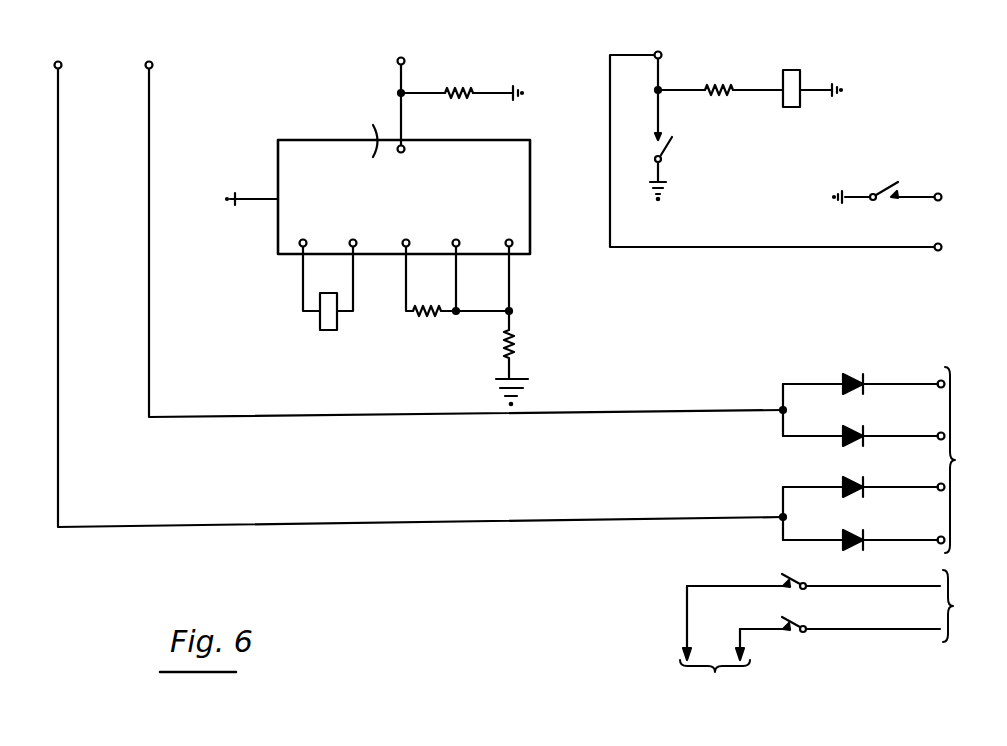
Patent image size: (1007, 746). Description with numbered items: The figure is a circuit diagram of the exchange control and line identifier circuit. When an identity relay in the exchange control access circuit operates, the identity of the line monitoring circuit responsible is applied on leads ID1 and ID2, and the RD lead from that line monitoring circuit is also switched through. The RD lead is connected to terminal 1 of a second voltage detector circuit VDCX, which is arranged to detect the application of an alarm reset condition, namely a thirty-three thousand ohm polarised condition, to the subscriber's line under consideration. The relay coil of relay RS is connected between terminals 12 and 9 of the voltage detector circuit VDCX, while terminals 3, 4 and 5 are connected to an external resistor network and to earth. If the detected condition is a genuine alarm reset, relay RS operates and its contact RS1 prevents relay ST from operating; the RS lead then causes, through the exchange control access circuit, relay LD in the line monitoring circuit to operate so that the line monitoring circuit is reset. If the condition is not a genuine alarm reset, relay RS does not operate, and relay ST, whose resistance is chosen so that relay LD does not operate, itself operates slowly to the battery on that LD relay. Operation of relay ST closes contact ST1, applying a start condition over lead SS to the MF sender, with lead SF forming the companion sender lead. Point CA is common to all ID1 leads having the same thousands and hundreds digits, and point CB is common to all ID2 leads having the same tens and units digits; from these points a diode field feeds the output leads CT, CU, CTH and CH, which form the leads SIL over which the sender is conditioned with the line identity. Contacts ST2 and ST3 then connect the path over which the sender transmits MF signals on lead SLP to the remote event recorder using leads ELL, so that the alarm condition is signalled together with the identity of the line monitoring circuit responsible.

The identity lead ID1 is at (411, 285).
The identity lead ID2 is at (456, 230).
The RD lead RD is at (455, 90).
The second voltage detector circuit VDCX is at (378, 169).
The terminal of voltage detector circuit 1 is at (409, 154).
The terminal of voltage detector circuit 12 is at (304, 266).
The terminal of voltage detector circuit 9 is at (347, 266).
The terminal of voltage detector circuit 3 is at (455, 268).
The terminal of voltage detector circuit 4 is at (455, 267).
The terminal of voltage detector circuit 5 is at (512, 313).
The RS lead RS is at (715, 85).
The contact of relay RS RS1 is at (679, 166).
The contact of relay ST ST1 is at (883, 188).
The start lead SS is at (953, 197).
The SF lead SF is at (953, 248).
The common point CA is at (752, 409).
The common point CB is at (752, 513).
The thousands output lead CT is at (864, 372).
The units output lead CU is at (864, 426).
The hundreds output lead CTH is at (864, 477).
The tens output lead CH is at (864, 530).
The sender identity leads SIL is at (966, 460).
The contact of relay ST ST2 is at (811, 610).
The contact of relay ST ST3 is at (838, 632).
The sender output lead SLP is at (968, 606).
The event recorder leads ELL is at (715, 677).